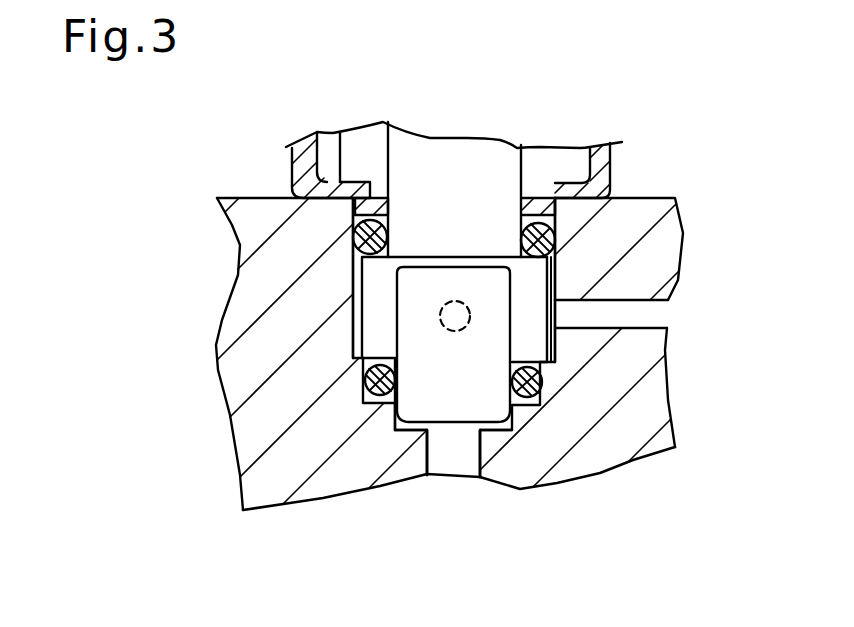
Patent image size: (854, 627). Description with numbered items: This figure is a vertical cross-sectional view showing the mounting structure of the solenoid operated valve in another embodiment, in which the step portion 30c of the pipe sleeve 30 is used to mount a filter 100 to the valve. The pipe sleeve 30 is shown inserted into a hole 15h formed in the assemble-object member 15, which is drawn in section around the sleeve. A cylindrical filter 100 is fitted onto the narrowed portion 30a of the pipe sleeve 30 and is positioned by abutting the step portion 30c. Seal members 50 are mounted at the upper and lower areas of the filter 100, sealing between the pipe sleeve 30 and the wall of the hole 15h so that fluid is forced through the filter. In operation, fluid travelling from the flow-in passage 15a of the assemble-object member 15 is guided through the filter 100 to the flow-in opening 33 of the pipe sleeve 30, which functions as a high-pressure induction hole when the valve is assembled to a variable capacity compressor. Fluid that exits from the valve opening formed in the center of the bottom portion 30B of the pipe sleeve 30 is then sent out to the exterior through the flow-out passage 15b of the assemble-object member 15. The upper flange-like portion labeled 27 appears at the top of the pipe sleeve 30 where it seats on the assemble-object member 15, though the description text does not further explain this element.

The assemble-object member 15 is at (583, 455).
The flow-in passage 15a is at (652, 313).
The flow-out passage 15b is at (437, 455).
The hole 15h is at (372, 268).
The cap 27 is at (612, 162).
The pipe sleeve 30 is at (465, 155).
The narrowed portion 30a is at (535, 352).
The bottom portion 30B is at (457, 427).
The step portion 30c is at (542, 283).
The flow-in opening 33 is at (440, 318).
The seal members 50 is at (368, 224).
The filter 100 is at (548, 342).